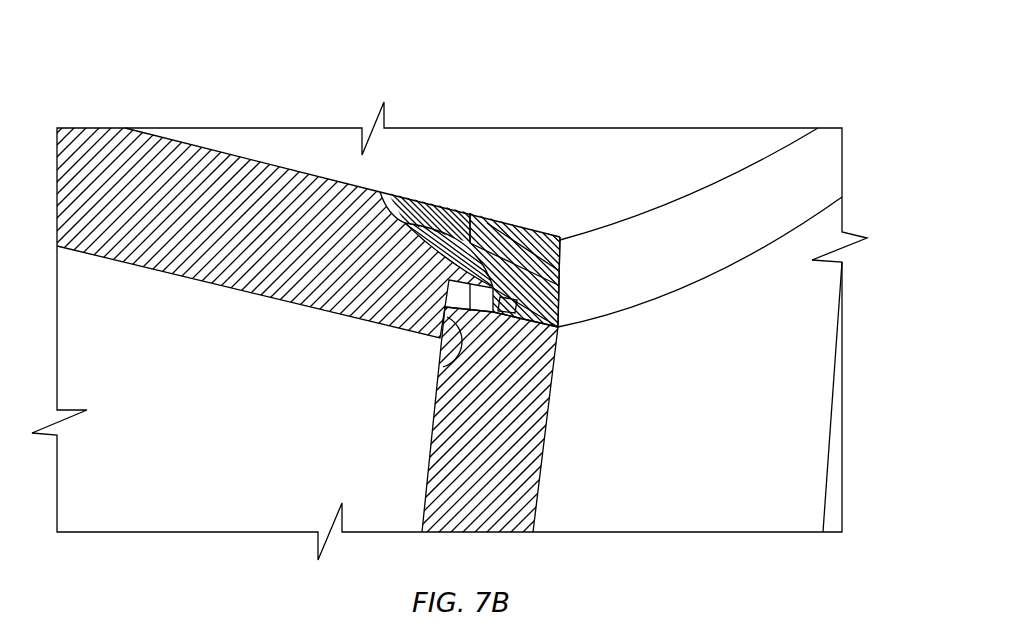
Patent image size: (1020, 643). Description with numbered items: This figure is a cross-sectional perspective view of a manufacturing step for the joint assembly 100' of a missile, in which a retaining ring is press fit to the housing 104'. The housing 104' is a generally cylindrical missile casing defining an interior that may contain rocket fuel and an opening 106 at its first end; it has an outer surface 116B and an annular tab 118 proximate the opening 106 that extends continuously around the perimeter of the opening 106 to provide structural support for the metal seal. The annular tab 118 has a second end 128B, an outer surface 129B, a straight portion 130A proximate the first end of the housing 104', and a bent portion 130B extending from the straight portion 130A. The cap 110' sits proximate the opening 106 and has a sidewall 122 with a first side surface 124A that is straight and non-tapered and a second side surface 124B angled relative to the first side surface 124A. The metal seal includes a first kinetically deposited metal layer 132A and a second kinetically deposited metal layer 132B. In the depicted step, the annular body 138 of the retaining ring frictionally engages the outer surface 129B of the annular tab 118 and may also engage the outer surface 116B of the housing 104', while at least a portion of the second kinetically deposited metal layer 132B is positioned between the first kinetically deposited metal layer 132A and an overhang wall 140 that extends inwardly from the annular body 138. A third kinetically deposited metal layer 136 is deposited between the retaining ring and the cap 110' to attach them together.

The joint assembly 100' is at (449, 285).
The housing 104' is at (510, 321).
The opening 106 is at (114, 290).
The cap 110' is at (394, 321).
The outer surface 116B is at (846, 474).
The annular tab 118 is at (559, 238).
The sidewall 122 is at (472, 226).
The first side surface 124A is at (443, 365).
The second side surface 124B is at (392, 194).
The second end 128B is at (563, 236).
The outer surface 129B is at (561, 240).
The straight portion 130A is at (557, 327).
The bent portion 130B is at (557, 237).
The first kinetically deposited metal layer 132A is at (513, 303).
The second kinetically deposited metal layer 132B is at (500, 228).
The third kinetically deposited metal layer 136 is at (408, 194).
The annular body 138 is at (560, 272).
The overhang wall 140 is at (445, 232).